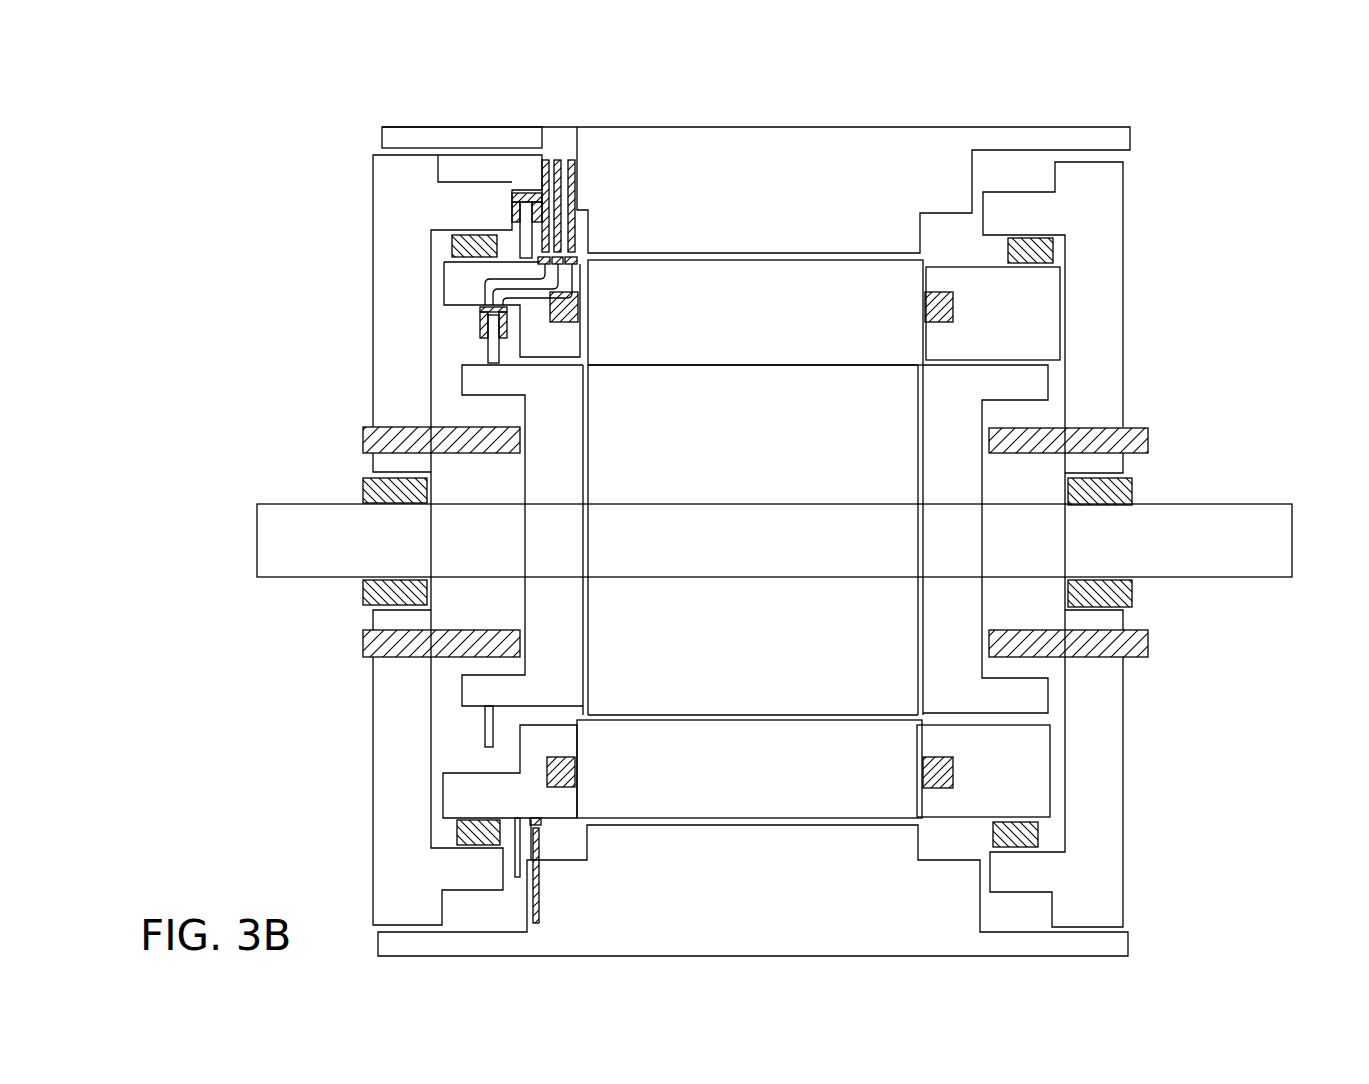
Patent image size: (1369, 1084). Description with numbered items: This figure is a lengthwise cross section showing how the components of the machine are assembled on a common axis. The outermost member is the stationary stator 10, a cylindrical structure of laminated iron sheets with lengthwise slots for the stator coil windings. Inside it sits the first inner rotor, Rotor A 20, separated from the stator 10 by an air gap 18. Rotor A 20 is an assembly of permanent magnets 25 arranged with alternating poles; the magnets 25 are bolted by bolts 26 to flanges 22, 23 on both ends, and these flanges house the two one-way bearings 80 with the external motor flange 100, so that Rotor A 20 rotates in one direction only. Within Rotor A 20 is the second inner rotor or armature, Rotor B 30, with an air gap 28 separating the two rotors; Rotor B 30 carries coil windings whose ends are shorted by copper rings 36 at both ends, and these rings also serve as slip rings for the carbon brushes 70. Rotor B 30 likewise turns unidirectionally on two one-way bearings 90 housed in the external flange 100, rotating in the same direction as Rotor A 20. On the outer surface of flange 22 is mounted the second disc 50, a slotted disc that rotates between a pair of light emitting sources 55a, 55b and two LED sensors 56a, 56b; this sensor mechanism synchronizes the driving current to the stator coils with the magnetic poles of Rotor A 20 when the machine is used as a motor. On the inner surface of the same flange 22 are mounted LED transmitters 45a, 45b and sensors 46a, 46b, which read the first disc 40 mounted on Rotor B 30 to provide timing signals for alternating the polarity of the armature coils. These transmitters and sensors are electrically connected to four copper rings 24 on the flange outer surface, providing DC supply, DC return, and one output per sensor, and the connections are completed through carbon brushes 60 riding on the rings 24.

The stationary stator 10 is at (818, 152).
The air gap 18 is at (803, 285).
The first inner rotor (Rotor A) 20 is at (694, 303).
The flange 22 is at (511, 499).
The flange 23 is at (1015, 306).
The copper rings 24 is at (578, 256).
The permanent magnets 25 is at (732, 321).
The bolts 26 is at (580, 309).
The air gap 28 is at (803, 325).
The second inner rotor or armature (Rotor B) 30 is at (735, 387).
The copper rings 36 is at (556, 429).
The disc 1 40 is at (486, 349).
The LED transmitter 45a is at (368, 342).
The LED transmitter 45b is at (478, 325).
The sensor 46a is at (368, 365).
The sensor 46b is at (503, 345).
The disc 2 50 is at (518, 238).
The light emitting source 55a is at (459, 171).
The light emitting source 55b is at (511, 207).
The LED sensor 56a is at (600, 242).
The LED sensor 56b is at (539, 233).
The carbon brushes 60 is at (577, 168).
The carbon brushes 70 is at (363, 434).
The one-way bearings 80 is at (451, 243).
The one-way bearings 90 is at (363, 488).
The external motor flange 100 is at (398, 325).